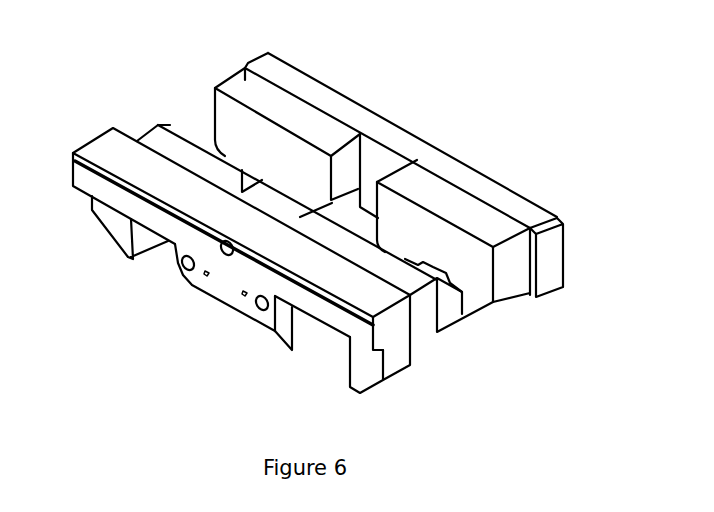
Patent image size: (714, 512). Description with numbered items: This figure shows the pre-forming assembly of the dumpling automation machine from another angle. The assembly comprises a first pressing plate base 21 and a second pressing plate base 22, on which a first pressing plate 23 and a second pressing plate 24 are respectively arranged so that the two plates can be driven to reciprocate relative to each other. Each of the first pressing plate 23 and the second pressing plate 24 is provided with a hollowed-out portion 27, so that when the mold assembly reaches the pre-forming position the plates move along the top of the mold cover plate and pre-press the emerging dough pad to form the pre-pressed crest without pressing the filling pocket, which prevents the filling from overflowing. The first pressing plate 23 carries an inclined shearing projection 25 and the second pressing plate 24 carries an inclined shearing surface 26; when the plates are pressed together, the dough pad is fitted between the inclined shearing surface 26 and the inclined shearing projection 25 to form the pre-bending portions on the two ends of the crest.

The first pressing plate base 21 is at (100, 143).
The second pressing plate base 22 is at (280, 80).
The first pressing plate 23 is at (151, 141).
The second pressing plate 24 is at (237, 87).
The inclined shearing projection 25 is at (430, 343).
The inclined shearing surface 26 is at (507, 292).
The hollowed-out portion 27 is at (448, 300).